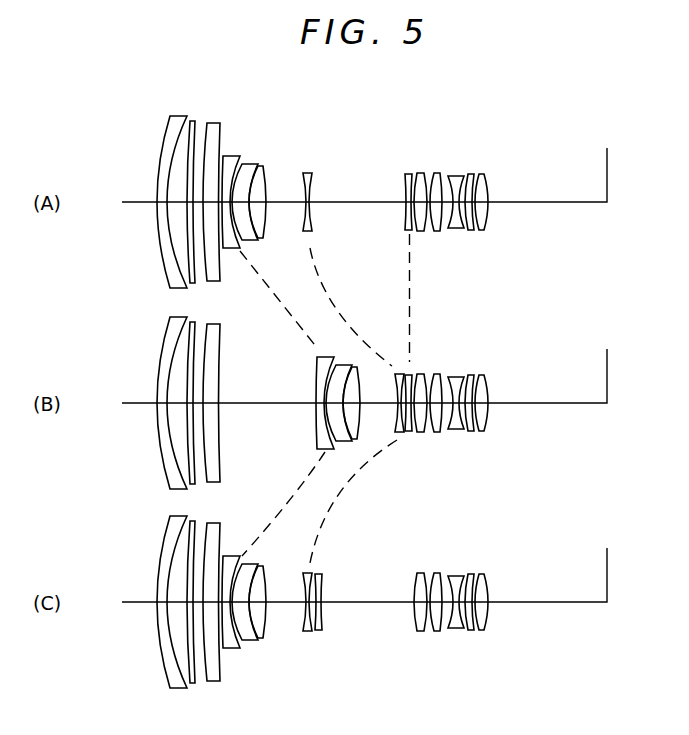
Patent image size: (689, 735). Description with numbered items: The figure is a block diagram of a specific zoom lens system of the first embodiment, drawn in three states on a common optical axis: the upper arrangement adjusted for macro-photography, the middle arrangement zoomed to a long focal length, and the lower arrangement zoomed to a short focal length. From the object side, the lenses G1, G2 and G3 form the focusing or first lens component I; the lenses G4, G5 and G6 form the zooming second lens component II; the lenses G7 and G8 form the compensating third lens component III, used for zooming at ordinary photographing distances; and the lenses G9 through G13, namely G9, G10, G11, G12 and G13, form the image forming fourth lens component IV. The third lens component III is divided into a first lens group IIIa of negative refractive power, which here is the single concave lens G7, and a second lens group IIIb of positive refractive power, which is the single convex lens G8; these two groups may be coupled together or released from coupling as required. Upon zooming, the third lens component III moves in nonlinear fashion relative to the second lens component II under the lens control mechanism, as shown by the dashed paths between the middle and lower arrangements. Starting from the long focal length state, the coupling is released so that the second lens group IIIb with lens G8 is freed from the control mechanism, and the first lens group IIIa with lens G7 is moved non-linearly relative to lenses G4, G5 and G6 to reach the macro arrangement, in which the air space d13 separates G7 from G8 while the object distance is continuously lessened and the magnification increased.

The lens G1 is at (174, 118).
The lens G2 is at (192, 135).
The lens G3 is at (217, 136).
The lens G4 is at (230, 163).
The lens G5 is at (245, 165).
The lens G6 is at (258, 180).
The concave lens G7 is at (312, 185).
The convex lens G8 is at (408, 196).
The lens G9 is at (422, 176).
The lens G10 is at (434, 178).
The lens G11 is at (455, 178).
The lens G12 is at (469, 180).
The lens G13 is at (483, 179).
The axial air space between seventh and eighth lens elements d13 is at (372, 210).
The first lens component I is at (170, 317).
The second lens component II is at (317, 353).
The third lens component III is at (392, 432).
The first lens group IIIa is at (300, 169).
The second lens group IIIb is at (403, 174).
The fourth lens component IV is at (415, 371).